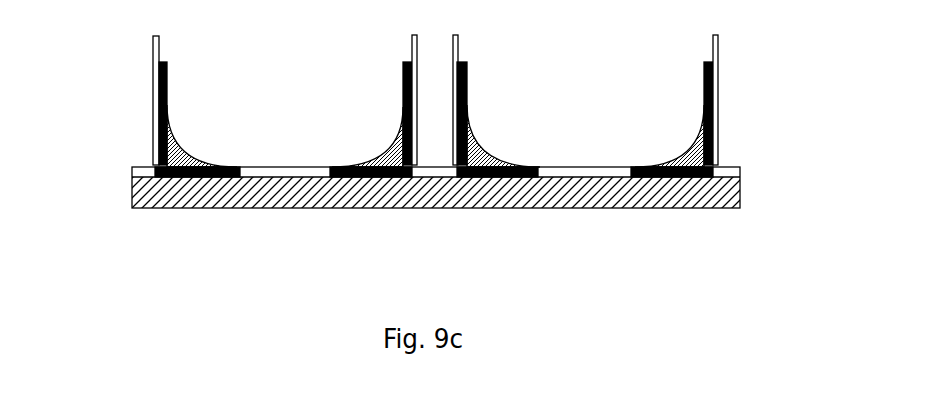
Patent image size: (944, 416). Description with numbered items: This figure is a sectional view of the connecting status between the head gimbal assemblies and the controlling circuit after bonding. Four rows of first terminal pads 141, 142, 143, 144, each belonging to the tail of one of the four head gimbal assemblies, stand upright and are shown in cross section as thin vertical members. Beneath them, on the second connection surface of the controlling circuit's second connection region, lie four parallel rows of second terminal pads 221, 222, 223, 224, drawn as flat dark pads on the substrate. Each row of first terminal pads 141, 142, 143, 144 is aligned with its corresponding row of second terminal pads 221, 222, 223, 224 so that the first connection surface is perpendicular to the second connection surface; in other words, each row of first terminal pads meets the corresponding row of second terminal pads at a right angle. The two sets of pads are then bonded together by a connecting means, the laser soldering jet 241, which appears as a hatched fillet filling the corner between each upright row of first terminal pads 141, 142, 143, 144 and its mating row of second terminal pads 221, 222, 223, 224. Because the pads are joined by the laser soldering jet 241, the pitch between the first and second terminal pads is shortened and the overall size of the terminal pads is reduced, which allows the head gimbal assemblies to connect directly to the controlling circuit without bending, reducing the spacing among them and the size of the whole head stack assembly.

The row of first terminal pads 141 is at (160, 88).
The row of first terminal pads 142 is at (407, 80).
The row of first terminal pads 143 is at (465, 78).
The row of first terminal pads 144 is at (717, 72).
The row of second terminal pads 221 is at (155, 165).
The row of second terminal pads 222 is at (365, 157).
The row of second terminal pads 223 is at (493, 153).
The row of second terminal pads 224 is at (715, 157).
The laser soldering jet 241 is at (160, 137).